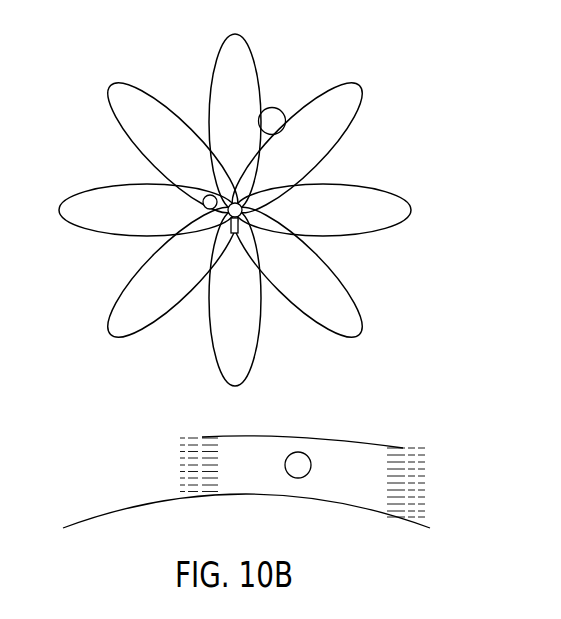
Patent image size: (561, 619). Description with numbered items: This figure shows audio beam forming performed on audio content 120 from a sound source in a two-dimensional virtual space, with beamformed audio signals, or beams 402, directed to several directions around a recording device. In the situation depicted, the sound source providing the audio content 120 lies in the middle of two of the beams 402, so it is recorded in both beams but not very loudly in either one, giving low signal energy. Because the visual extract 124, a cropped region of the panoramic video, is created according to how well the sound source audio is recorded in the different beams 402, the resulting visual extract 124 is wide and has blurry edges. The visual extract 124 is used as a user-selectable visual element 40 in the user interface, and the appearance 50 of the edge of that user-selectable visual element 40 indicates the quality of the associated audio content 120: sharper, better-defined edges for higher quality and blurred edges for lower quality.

The beams 402 is at (235, 34).
The audio content 120 is at (267, 110).
The user-selectable visual element 40 is at (161, 451).
The visual extract 124 is at (362, 458).
The appearance 50 is at (415, 475).